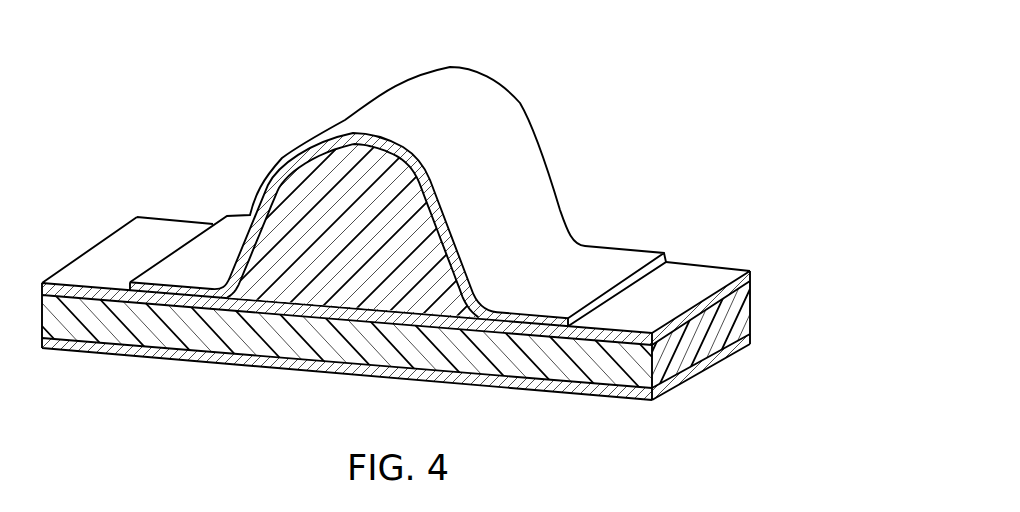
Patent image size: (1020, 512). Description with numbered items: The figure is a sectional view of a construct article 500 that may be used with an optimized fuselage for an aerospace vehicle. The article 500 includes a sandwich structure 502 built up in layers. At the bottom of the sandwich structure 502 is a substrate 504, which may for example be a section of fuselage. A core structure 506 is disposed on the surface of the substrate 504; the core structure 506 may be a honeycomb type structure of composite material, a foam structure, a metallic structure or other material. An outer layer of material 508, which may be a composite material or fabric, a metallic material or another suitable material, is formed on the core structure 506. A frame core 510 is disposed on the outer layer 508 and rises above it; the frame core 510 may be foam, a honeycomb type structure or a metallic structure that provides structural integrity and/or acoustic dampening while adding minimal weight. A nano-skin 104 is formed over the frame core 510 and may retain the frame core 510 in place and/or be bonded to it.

The construct article 500 is at (438, 254).
The nano-skin 104 is at (556, 191).
The sandwich structure 502 is at (438, 287).
The substrate 504 is at (587, 397).
The core structure 506 is at (746, 304).
The outer layer of material 508 is at (753, 272).
The frame core 510 is at (262, 270).